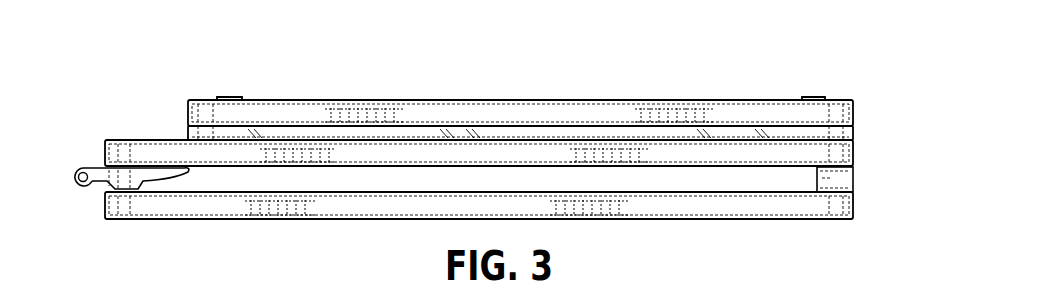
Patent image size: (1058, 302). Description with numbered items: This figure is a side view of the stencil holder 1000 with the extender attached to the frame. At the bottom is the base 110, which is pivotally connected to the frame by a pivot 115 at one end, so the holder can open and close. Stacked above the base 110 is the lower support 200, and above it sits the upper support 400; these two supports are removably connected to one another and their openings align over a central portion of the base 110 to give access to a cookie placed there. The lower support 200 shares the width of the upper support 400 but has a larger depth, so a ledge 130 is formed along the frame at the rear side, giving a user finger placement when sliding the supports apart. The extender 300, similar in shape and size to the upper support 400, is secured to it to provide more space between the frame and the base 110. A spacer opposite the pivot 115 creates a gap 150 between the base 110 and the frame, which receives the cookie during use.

The stencil holder 1000 is at (499, 123).
The upper support 400 is at (209, 99).
The extender 300 is at (854, 136).
The lower support 200 is at (124, 139).
The ledge 130 is at (164, 140).
The pivot 115 is at (75, 169).
The gap 150 is at (790, 179).
The base 110 is at (854, 204).